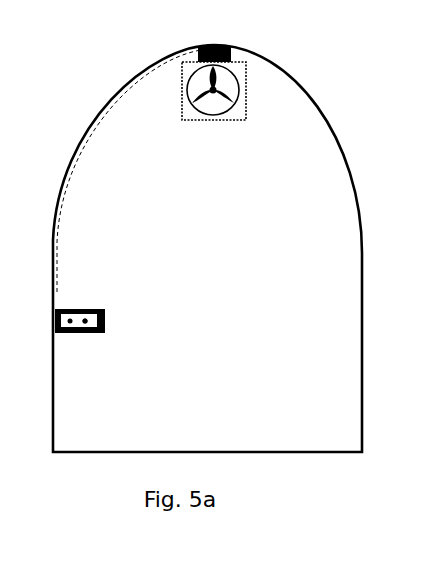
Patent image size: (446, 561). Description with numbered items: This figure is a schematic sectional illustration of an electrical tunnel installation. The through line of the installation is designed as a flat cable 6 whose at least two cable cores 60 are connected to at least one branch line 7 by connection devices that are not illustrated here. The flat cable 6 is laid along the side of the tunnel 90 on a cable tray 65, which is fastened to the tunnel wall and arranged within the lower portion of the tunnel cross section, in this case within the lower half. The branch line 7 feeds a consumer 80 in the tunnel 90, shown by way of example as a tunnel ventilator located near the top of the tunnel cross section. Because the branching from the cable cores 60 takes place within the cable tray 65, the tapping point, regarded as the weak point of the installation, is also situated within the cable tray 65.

The tunnel 90 is at (333, 143).
The branch line 7 is at (63, 230).
The consumer 80 is at (246, 78).
The cable core 60 is at (73, 333).
The flat cable 6 is at (83, 308).
The cable tray 65 is at (105, 311).